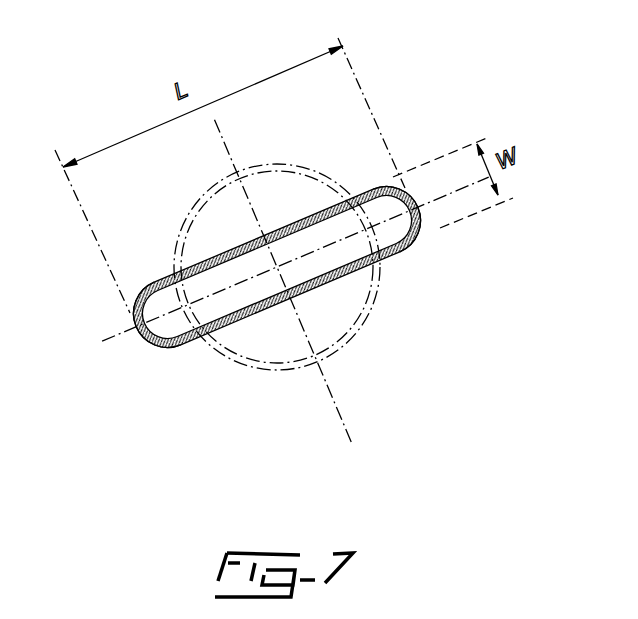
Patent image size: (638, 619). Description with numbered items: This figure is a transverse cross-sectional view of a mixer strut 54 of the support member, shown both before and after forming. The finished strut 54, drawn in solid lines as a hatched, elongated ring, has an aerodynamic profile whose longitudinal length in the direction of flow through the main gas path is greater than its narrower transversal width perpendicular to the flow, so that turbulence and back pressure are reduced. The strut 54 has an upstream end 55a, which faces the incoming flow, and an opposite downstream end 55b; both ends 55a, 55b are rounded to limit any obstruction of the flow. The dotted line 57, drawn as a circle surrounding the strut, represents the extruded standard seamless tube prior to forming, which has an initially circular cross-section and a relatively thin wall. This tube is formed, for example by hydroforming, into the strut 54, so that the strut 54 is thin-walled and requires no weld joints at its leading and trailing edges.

The mixer strut 54 is at (392, 181).
The upstream end 55a is at (138, 328).
The downstream end 55b is at (421, 203).
The dotted line representing extruded seamless tube 57 is at (382, 274).